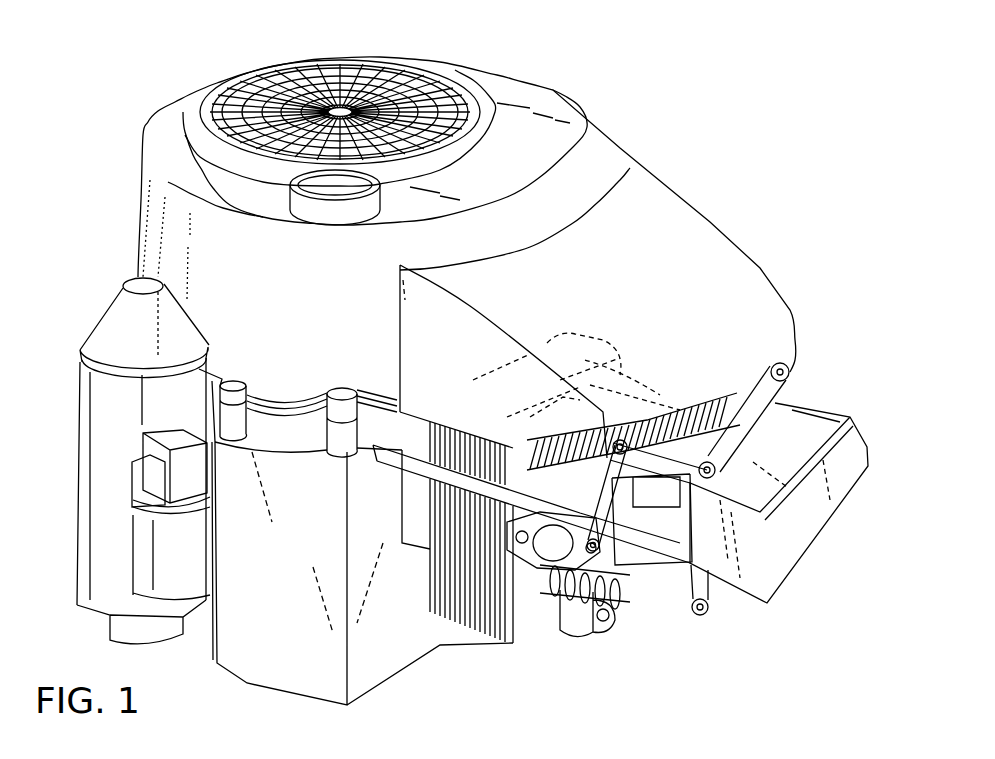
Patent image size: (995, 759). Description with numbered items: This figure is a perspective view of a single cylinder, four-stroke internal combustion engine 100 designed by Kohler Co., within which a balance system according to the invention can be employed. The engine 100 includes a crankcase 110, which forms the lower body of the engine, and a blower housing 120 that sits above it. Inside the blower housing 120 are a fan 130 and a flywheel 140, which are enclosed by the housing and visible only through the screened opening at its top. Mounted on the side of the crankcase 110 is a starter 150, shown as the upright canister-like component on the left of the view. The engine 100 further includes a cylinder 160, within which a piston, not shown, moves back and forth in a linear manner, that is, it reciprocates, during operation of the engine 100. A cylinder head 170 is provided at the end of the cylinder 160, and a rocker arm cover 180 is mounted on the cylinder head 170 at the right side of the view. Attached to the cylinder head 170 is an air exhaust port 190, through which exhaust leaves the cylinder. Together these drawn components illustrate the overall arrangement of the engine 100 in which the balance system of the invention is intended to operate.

The internal combustion engine 100 is at (740, 135).
The crankcase 110 is at (245, 682).
The blower housing 120 is at (152, 118).
The fan 130 is at (553, 91).
The flywheel 140 is at (553, 91).
The starter 150 is at (78, 607).
The cylinder 160 is at (452, 625).
The cylinder head 170 is at (640, 610).
The rocker arm cover 180 is at (793, 575).
The air exhaust port 190 is at (513, 646).